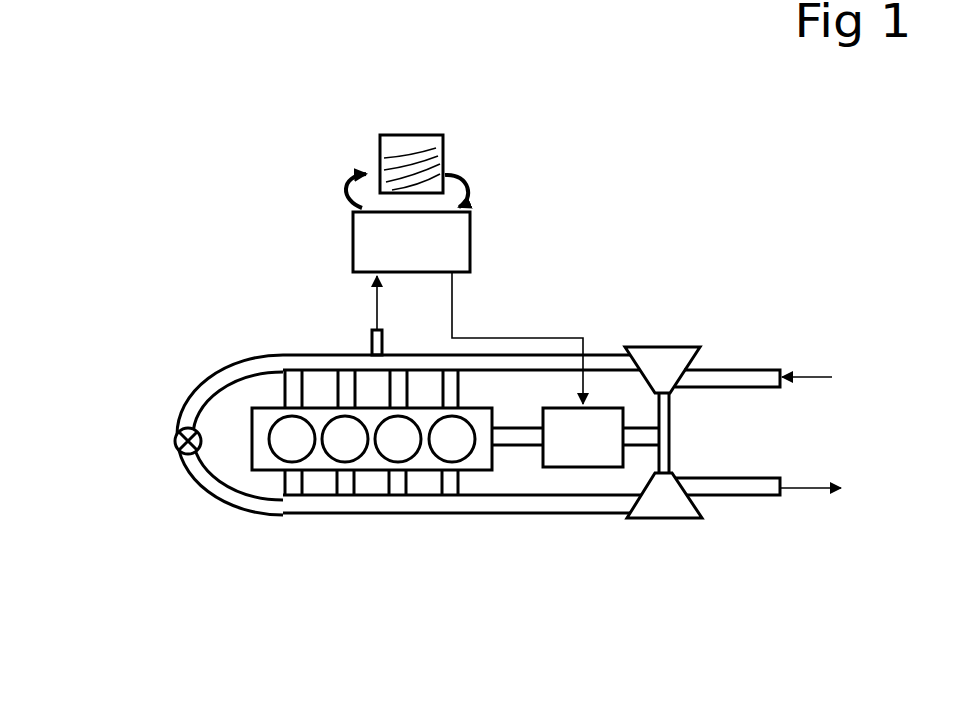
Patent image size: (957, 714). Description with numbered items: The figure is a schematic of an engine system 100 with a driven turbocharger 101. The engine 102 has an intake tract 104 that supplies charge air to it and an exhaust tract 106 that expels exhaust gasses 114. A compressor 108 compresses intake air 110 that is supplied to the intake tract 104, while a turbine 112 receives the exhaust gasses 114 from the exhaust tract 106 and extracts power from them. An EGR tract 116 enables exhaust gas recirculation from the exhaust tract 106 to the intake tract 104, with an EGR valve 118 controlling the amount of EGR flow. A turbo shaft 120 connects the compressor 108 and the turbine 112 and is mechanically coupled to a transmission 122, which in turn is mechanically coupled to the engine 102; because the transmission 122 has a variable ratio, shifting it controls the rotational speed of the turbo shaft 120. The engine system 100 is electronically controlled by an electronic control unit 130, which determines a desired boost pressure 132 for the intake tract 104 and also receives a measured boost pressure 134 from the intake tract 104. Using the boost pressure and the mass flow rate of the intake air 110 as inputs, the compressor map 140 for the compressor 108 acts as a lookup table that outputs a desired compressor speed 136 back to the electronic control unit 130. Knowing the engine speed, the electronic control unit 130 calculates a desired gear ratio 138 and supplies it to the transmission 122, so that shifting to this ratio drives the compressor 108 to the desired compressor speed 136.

The engine system 100 is at (156, 83).
The driven turbocharger 101 is at (684, 434).
The engine 102 is at (292, 435).
The intake tract 104 is at (300, 362).
The exhaust tract 106 is at (305, 505).
The compressor 108 is at (655, 363).
The intake air 110 is at (815, 377).
The turbine 112 is at (663, 502).
The exhaust gasses 114 is at (807, 488).
The EGR tract 116 is at (222, 497).
The EGR valve 118 is at (178, 440).
The turbo shaft 120 is at (663, 458).
The transmission 122 is at (568, 450).
The electronic control unit 130 is at (460, 222).
The desired boost pressure 132 is at (363, 172).
The measured boost pressure 134 is at (373, 302).
The desired compressor speed 136 is at (460, 172).
The desired gear ratio 138 is at (537, 338).
The compressor map 140 is at (417, 143).